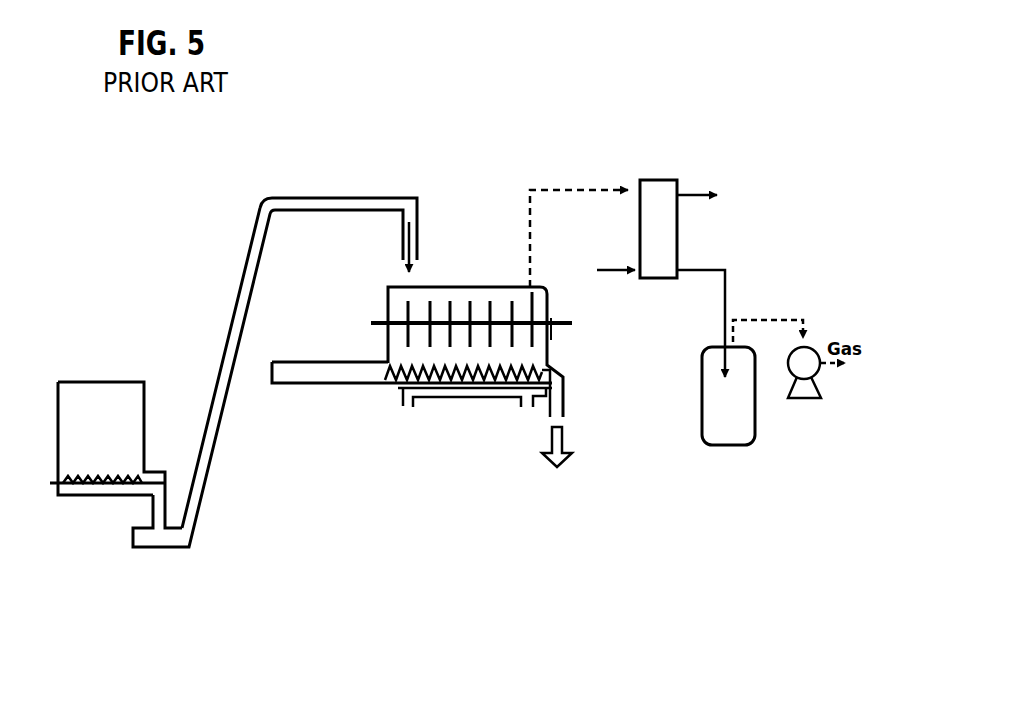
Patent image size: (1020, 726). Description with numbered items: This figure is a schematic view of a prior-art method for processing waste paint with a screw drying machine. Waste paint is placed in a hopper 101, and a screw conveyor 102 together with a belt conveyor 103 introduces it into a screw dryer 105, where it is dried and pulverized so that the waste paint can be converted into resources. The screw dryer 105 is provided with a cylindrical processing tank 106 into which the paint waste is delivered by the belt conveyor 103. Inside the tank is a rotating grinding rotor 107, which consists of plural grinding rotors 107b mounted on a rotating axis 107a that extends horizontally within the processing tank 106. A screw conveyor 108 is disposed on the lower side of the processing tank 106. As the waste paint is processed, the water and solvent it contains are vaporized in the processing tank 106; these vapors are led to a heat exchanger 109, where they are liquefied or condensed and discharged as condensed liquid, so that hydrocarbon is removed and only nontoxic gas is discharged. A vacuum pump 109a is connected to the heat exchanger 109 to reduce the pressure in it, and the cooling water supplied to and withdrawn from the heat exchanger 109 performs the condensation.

The hopper 101 is at (70, 420).
The screw conveyor 102 is at (83, 496).
The belt conveyor 103 is at (210, 450).
The screw dryer 105 is at (492, 245).
The cylindrical processing tank 106 is at (452, 286).
The rotating grinding rotor 107 is at (534, 302).
The rotating axis 107a is at (388, 322).
The grinding rotors 107b is at (408, 310).
The screw conveyor 108 is at (475, 383).
The heat exchanger 109 is at (656, 166).
The vacuum pump 109a is at (730, 437).